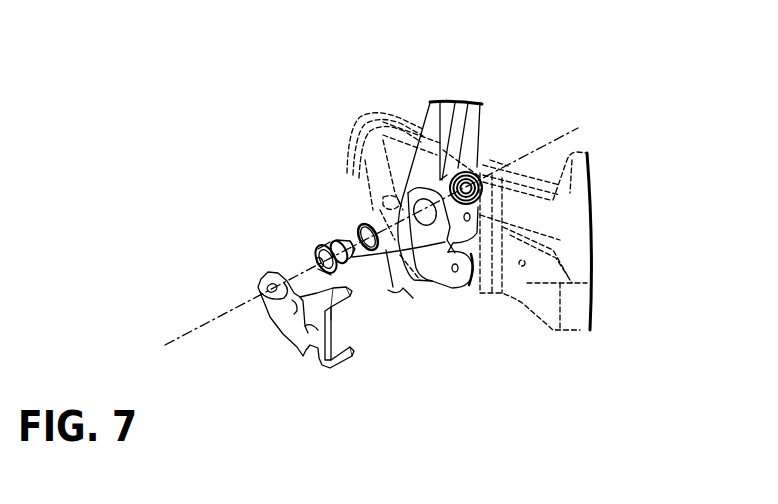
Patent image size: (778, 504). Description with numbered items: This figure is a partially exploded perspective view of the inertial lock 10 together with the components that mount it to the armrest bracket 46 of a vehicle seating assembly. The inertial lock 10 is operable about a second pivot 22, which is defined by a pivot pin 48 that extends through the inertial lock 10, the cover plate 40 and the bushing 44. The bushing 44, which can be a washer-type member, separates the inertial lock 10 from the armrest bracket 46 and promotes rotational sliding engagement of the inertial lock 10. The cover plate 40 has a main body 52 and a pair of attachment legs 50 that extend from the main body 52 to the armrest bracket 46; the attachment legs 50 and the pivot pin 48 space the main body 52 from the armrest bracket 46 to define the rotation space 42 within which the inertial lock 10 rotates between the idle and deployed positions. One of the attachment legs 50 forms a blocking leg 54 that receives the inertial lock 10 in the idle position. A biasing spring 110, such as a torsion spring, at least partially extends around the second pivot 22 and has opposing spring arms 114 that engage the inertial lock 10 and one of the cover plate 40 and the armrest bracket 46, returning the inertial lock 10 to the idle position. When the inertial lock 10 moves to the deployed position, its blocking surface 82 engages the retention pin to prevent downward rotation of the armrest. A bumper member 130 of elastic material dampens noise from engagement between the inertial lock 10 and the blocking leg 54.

The inertial lock 10 is at (534, 215).
The second pivot 22 is at (311, 264).
The cover plate 40 is at (269, 346).
The rotation space 42 is at (347, 312).
The bushing 44 is at (480, 143).
The armrest bracket 46 is at (588, 300).
The pivot pin 48 is at (335, 235).
The attachment legs 50 is at (317, 277).
The main body 52 is at (283, 320).
The blocking leg 54 is at (352, 355).
The blocking surface 82 is at (433, 278).
The biasing spring 110 is at (362, 226).
The spring arms 114 is at (395, 292).
The bumper member 130 is at (470, 253).